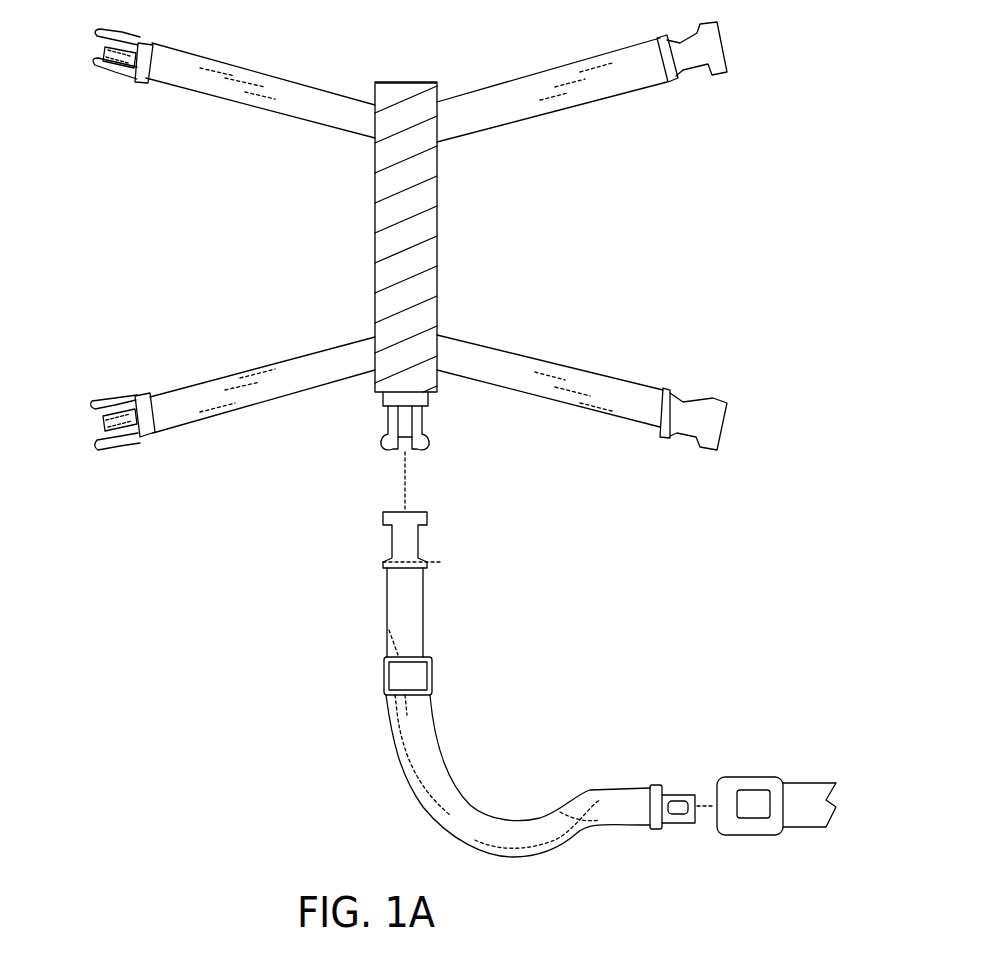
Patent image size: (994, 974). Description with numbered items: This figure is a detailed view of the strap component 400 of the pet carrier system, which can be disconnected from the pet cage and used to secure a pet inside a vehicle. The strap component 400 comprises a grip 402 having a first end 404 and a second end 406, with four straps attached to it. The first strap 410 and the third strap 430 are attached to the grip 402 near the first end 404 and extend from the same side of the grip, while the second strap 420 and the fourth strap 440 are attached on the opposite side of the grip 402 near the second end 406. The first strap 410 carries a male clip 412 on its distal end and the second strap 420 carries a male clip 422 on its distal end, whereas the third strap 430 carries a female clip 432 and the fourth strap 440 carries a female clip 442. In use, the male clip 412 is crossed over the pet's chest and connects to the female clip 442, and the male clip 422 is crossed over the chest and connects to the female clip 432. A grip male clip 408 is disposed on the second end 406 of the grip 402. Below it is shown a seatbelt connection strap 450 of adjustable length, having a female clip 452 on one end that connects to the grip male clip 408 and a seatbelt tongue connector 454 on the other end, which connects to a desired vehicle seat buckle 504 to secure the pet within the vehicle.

The strap component 400 is at (170, 575).
The grip 402 is at (417, 225).
The first end 404 is at (408, 90).
The second end 406 is at (398, 380).
The grip male clip 408 is at (415, 398).
The first strap 410 is at (212, 85).
The male clip 412 is at (108, 78).
The second strap 420 is at (212, 387).
The male clip 422 is at (90, 410).
The third strap 430 is at (593, 88).
The female clip 432 is at (703, 52).
The fourth strap 440 is at (597, 400).
The female clip 442 is at (723, 417).
The seatbelt connection strap 450 is at (418, 753).
The female clip 452 is at (400, 548).
The seatbelt tongue connector 454 is at (671, 800).
The vehicle seat buckle 504 is at (732, 792).